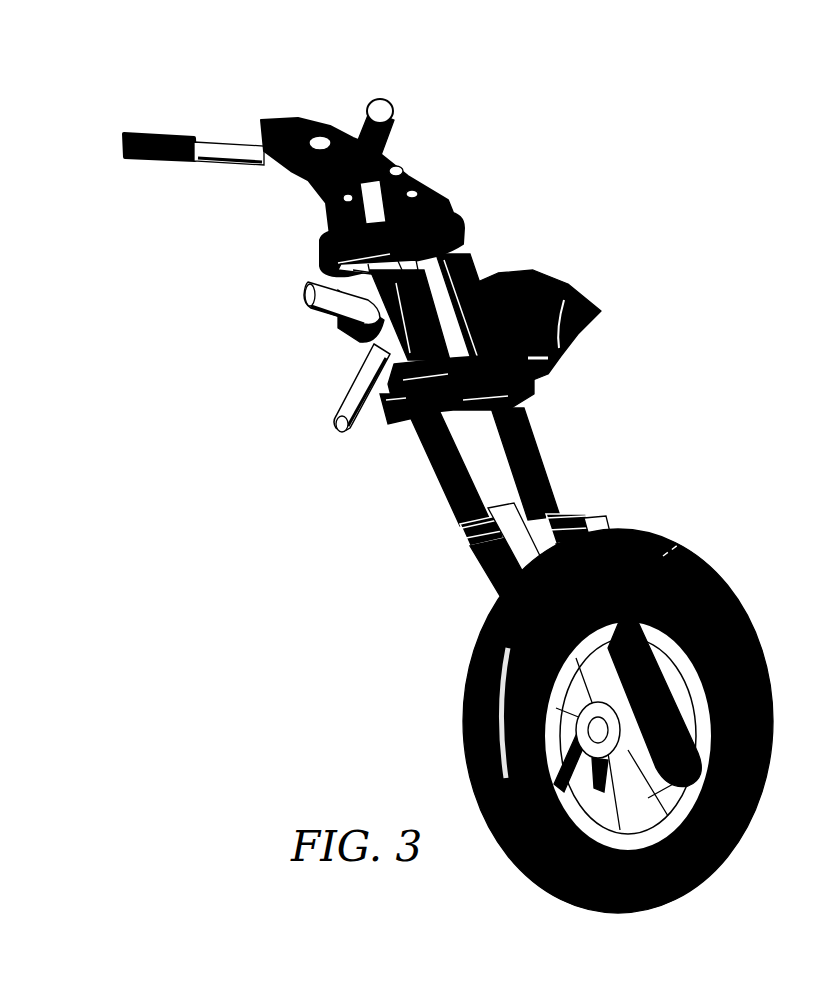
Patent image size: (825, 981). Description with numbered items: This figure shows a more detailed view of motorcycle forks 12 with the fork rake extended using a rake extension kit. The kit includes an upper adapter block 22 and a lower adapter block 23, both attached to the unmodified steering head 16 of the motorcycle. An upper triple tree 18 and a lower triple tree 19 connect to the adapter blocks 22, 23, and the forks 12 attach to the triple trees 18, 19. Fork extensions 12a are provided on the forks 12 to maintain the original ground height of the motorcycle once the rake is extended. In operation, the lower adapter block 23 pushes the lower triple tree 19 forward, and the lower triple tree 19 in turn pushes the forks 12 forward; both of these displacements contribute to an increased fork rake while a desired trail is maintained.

The upper triple tree 18 is at (440, 218).
The upper adapter block 22 is at (330, 296).
The steering head 16 is at (368, 334).
The lower triple tree 19 is at (500, 387).
The lower adapter block 23 is at (388, 420).
The forks 12 is at (558, 468).
The fork extensions 12a is at (680, 553).